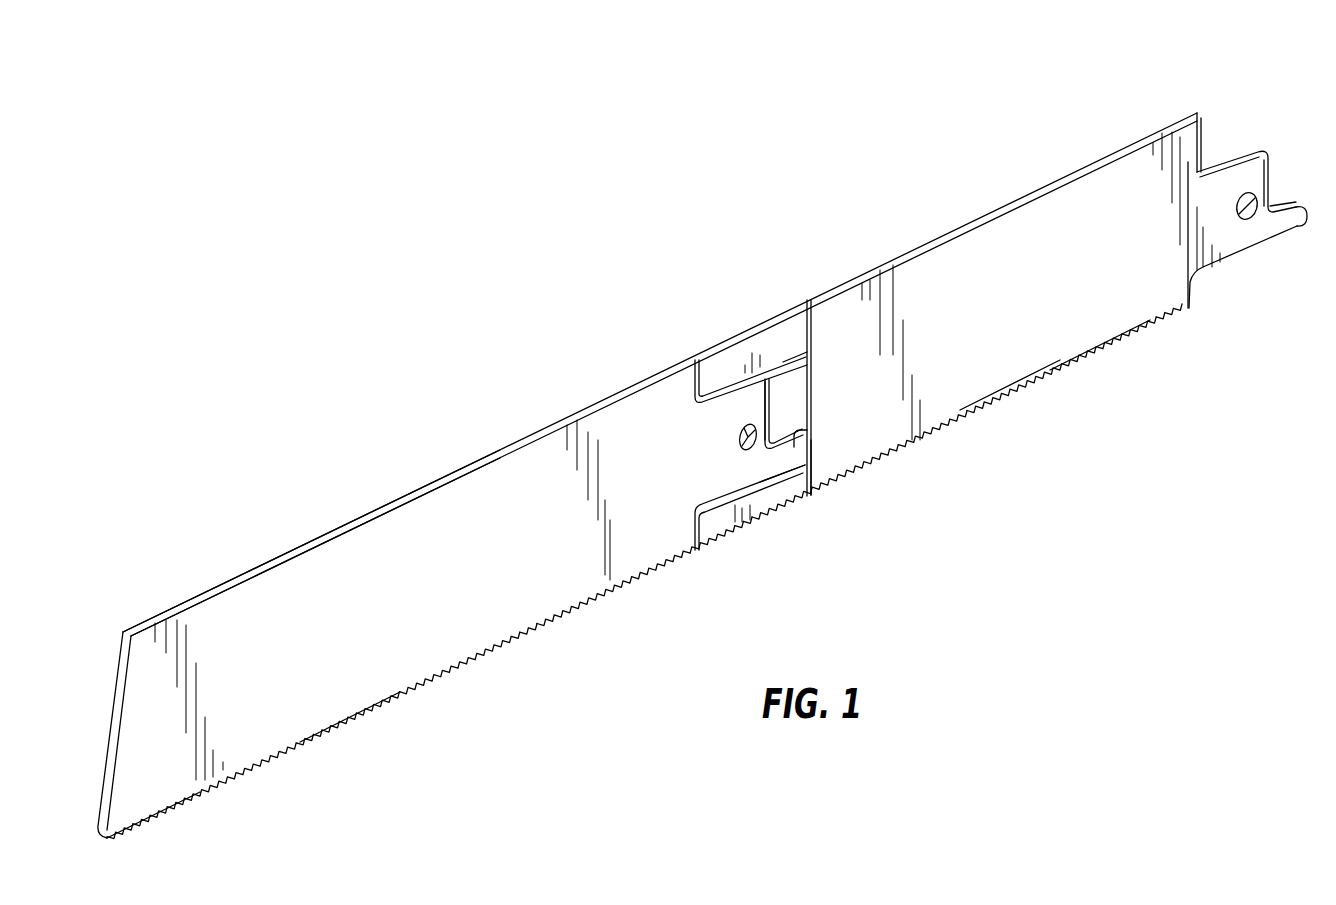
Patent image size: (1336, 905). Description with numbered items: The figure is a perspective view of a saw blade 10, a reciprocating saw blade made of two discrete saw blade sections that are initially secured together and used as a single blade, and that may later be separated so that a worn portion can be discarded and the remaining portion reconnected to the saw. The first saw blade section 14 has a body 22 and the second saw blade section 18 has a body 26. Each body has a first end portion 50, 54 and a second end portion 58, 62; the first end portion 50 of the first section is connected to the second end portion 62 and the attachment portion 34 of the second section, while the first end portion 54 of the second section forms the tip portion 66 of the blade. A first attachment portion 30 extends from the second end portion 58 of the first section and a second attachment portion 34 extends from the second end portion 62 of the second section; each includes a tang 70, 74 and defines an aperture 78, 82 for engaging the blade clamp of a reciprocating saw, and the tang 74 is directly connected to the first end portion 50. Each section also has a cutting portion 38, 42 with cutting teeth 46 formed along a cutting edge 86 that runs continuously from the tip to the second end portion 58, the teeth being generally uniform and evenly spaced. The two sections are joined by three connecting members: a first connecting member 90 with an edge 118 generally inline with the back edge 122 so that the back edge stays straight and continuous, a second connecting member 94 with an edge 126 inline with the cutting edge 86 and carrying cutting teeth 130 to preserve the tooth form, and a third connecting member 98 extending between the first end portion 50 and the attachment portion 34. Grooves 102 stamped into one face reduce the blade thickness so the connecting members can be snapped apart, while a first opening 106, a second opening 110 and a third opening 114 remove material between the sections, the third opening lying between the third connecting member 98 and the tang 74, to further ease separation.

The saw blade 10 is at (834, 84).
The first saw blade section 14 is at (952, 252).
The second saw blade section 18 is at (262, 600).
The body 22 is at (1076, 250).
The body 26 is at (362, 563).
The first attachment portion 30 is at (1236, 178).
The second attachment portion 34 is at (738, 380).
The cutting portion 38 is at (1010, 405).
The cutting portion 42 is at (250, 770).
The cutting teeth 46 is at (345, 735).
The first end portion 50 is at (796, 318).
The first end portion 54 is at (121, 655).
The second end portion 58 is at (1201, 132).
The second end portion 62 is at (708, 384).
The tip portion 66 is at (102, 810).
The tang 70 is at (1296, 228).
The tang 74 is at (797, 513).
The aperture 78 is at (1250, 200).
The aperture 82 is at (738, 438).
The cutting edge 86 is at (500, 652).
The first connecting member 90 is at (794, 340).
The second connecting member 94 is at (718, 525).
The third connecting member 98 is at (812, 397).
The grooves 102 is at (697, 360).
The first opening 106 is at (775, 365).
The second opening 110 is at (778, 458).
The third opening 114 is at (812, 462).
The edge 118 is at (745, 365).
The back edge 122 is at (430, 483).
The edge 126 is at (799, 497).
The cutting teeth 130 is at (752, 510).